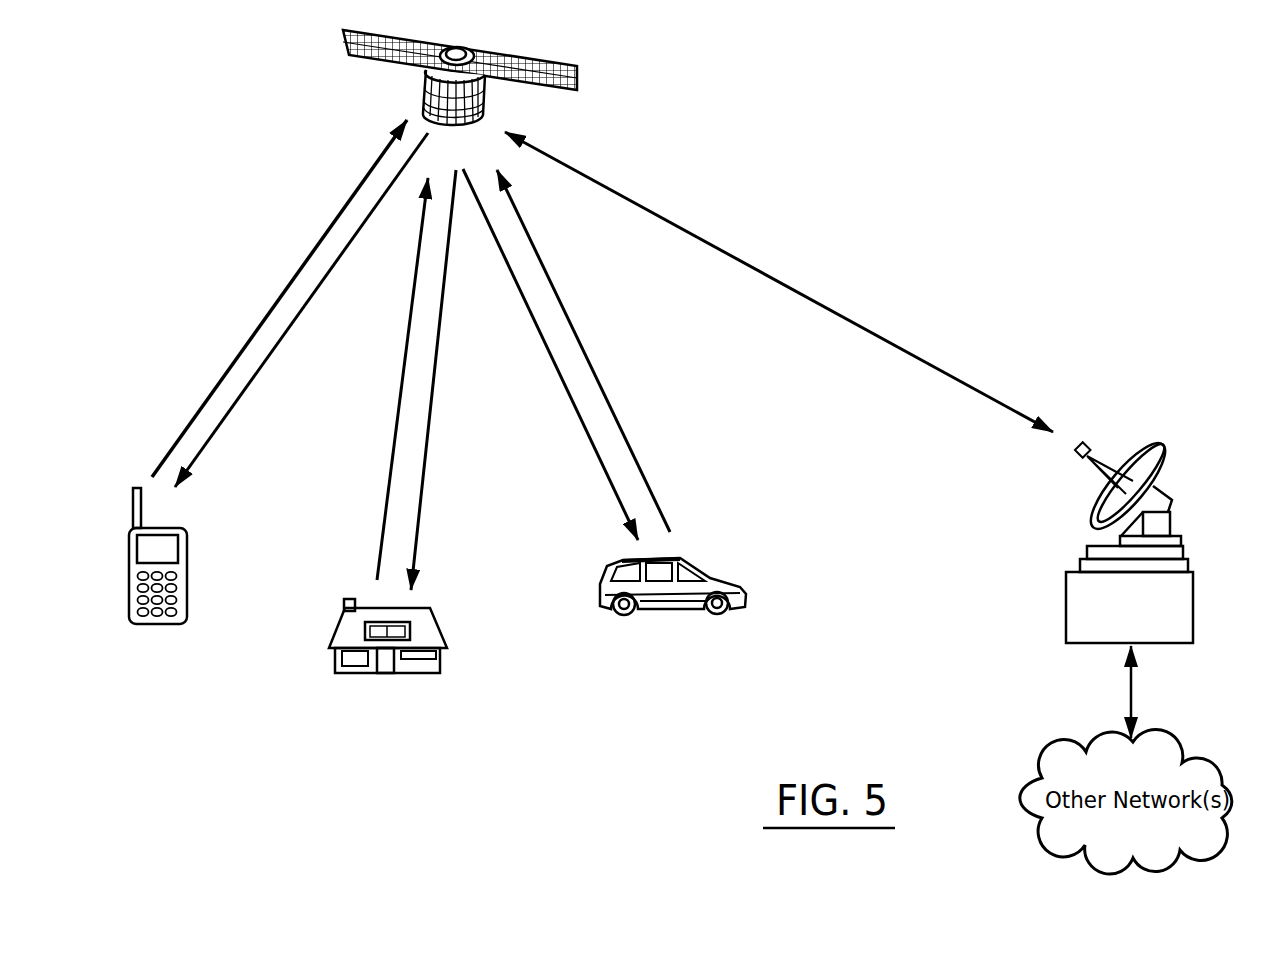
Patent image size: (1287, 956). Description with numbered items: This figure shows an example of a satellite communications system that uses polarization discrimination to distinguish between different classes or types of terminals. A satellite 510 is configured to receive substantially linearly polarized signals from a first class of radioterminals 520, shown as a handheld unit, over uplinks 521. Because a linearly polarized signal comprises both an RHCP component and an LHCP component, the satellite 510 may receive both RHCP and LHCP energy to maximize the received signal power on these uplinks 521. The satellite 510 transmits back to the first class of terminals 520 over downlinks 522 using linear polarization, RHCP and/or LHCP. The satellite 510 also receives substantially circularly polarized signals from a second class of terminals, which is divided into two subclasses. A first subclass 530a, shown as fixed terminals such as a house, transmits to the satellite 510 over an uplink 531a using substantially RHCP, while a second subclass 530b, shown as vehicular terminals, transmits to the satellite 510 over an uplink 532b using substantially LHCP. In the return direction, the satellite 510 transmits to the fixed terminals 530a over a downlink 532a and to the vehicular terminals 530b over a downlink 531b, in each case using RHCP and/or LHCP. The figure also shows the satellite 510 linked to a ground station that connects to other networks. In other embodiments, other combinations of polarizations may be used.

The satellite 510 is at (518, 58).
The first class of radioterminals 520 is at (187, 566).
The uplinks 521 is at (222, 376).
The downlinks 522 is at (286, 330).
The subclass of fixed terminals 530a is at (333, 658).
The subclass of vehicular terminals 530b is at (710, 572).
The uplink 531a is at (378, 552).
The downlink 532a is at (416, 542).
The downlink 531b is at (547, 347).
The uplink 532b is at (613, 405).